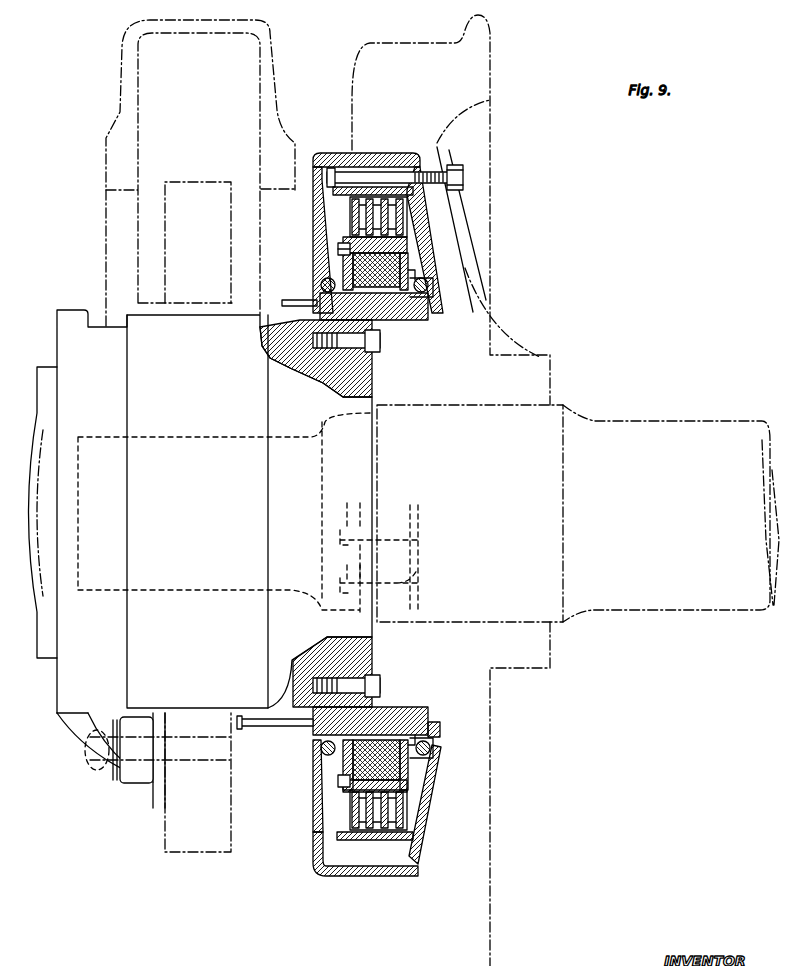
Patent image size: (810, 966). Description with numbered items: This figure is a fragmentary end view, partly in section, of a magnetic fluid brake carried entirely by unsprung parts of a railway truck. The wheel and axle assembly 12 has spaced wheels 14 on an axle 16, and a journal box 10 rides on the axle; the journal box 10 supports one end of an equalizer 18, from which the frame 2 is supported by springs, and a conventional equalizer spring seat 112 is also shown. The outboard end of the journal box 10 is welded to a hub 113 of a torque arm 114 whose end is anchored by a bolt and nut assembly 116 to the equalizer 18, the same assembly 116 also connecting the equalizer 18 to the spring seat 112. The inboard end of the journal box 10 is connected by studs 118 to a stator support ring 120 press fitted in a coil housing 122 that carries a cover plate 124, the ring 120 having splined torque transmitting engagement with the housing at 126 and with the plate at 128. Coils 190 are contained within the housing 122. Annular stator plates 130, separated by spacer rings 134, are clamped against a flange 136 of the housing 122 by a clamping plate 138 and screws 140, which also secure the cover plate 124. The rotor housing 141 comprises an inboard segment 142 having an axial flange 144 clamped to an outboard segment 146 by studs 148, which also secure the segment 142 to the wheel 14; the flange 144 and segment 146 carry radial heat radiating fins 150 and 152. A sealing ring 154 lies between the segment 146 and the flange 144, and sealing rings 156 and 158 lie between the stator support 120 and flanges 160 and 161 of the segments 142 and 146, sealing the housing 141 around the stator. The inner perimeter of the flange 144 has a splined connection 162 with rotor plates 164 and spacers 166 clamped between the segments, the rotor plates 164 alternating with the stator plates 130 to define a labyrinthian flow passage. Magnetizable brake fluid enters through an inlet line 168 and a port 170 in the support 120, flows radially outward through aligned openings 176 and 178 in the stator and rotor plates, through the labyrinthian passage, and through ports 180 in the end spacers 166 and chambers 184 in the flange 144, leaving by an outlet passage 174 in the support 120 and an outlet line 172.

The frame 2 is at (119, 124).
The journal box 10 is at (100, 360).
The wheel and axle assembly 12 is at (717, 422).
The wheel 14 is at (472, 67).
The axle 16 is at (678, 600).
The equalizer 18 is at (185, 200).
The equalizer spring seat 112 is at (153, 785).
The hub 113 is at (63, 713).
The torque arm 114 is at (85, 738).
The bolt and nut assembly 116 is at (98, 775).
The studs 118 is at (380, 350).
The stator support hub or ring 120 is at (360, 370).
The coil housing 122 is at (408, 262).
The cover plate 124 is at (350, 272).
The splined engagement 126 is at (432, 280).
The splined engagement 128 is at (318, 296).
The annular stator plates 130 is at (407, 217).
The spacer rings 134 is at (400, 247).
The flange 136 is at (408, 250).
The clamping plate 138 is at (338, 248).
The screws 140 is at (345, 255).
The rotor housing 141 is at (343, 152).
The inboard plate or segment 142 is at (413, 208).
The axial flange 144 is at (372, 188).
The outboard segment 146 is at (350, 225).
The studs 148 is at (465, 178).
The radial heat radiating fins 150 is at (395, 215).
The radial heat radiating fins 152 is at (320, 237).
The annular sealing ring 154 is at (345, 195).
The sealing ring 156 is at (430, 290).
The sealing ring 158 is at (322, 288).
The flange 160 is at (434, 300).
The flange 161 is at (325, 280).
The splined connection 162 is at (380, 235).
The rotor plates 164 is at (400, 228).
The spacers 166 is at (445, 192).
The inlet line 168 is at (264, 336).
The port 170 is at (284, 350).
The outlet line 172 is at (238, 722).
The outlet port or passage 174 is at (440, 700).
The openings 176 is at (300, 300).
The openings 178 is at (432, 172).
The ports 180 is at (432, 848).
The chambers 184 is at (345, 875).
The coils 190 is at (382, 343).